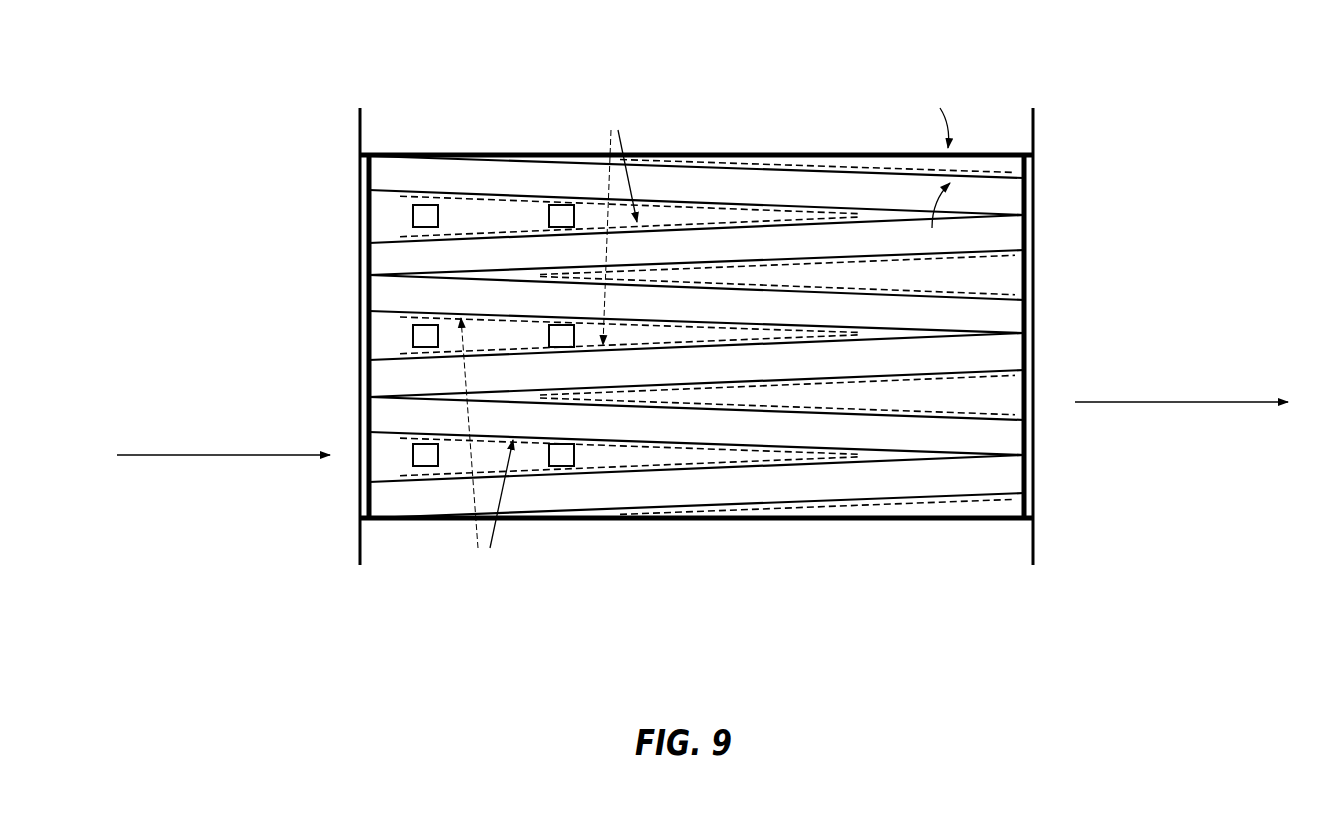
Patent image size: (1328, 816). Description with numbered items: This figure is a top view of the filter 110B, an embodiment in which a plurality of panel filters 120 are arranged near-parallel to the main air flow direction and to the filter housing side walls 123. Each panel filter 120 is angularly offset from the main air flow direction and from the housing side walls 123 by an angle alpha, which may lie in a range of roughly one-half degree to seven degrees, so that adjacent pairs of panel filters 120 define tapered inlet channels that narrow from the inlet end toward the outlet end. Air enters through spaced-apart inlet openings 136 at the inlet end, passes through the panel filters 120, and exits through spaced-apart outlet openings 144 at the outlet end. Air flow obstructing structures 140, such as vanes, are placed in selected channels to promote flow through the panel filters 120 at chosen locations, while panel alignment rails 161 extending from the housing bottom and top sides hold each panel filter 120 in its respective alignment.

The filter 110B is at (702, 309).
The panel filter 120 is at (748, 243).
The filter housing side wall 123 is at (700, 151).
The inlet opening 136 is at (361, 213).
The air flow obstructing structure 140 is at (427, 212).
The outlet opening 144 is at (1029, 173).
The panel alignment rail 161 is at (620, 402).